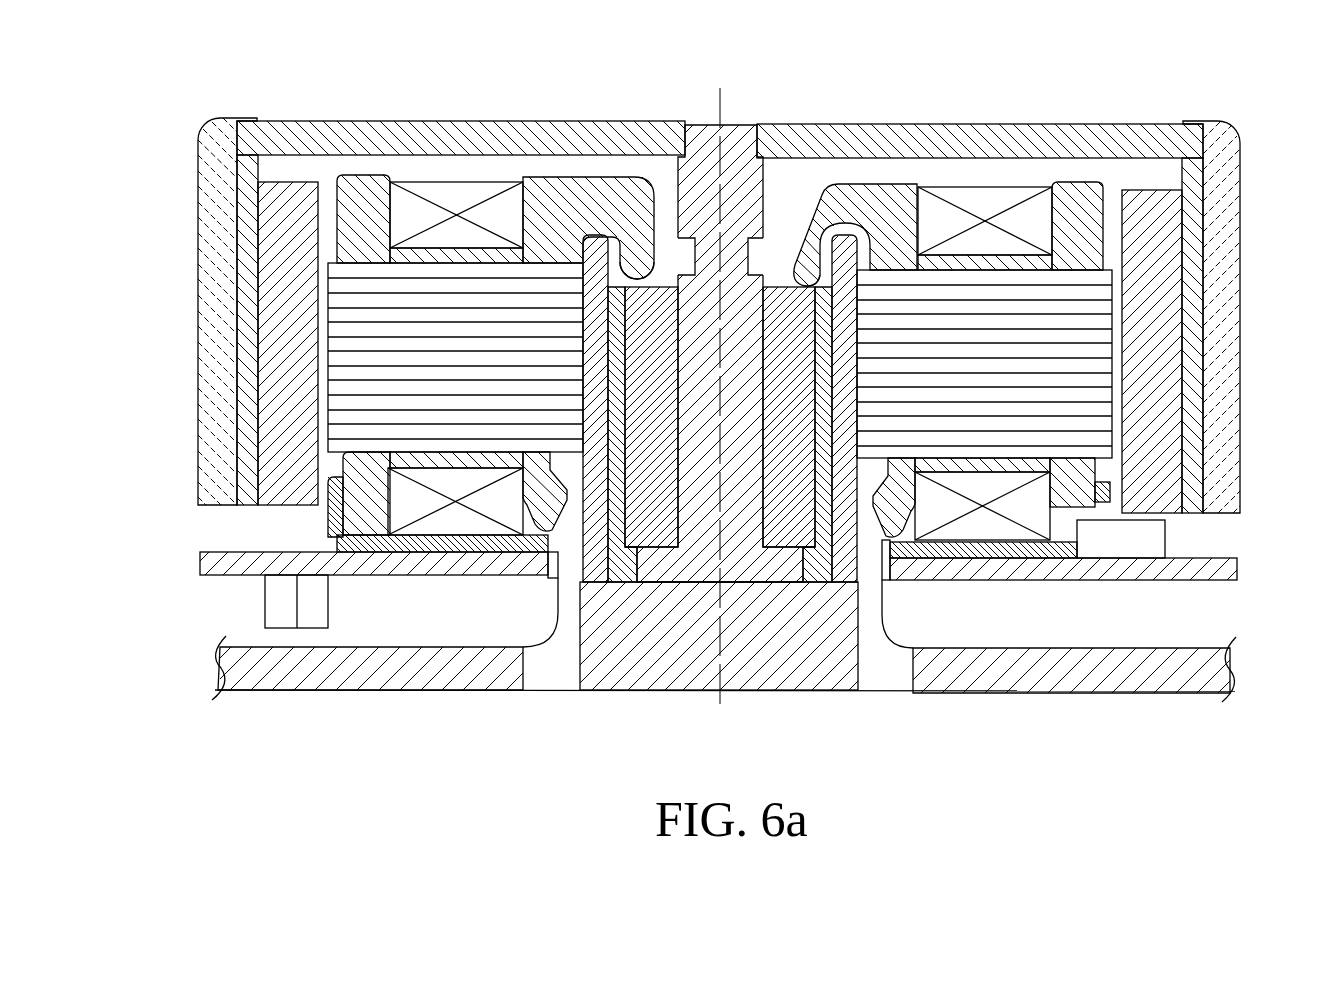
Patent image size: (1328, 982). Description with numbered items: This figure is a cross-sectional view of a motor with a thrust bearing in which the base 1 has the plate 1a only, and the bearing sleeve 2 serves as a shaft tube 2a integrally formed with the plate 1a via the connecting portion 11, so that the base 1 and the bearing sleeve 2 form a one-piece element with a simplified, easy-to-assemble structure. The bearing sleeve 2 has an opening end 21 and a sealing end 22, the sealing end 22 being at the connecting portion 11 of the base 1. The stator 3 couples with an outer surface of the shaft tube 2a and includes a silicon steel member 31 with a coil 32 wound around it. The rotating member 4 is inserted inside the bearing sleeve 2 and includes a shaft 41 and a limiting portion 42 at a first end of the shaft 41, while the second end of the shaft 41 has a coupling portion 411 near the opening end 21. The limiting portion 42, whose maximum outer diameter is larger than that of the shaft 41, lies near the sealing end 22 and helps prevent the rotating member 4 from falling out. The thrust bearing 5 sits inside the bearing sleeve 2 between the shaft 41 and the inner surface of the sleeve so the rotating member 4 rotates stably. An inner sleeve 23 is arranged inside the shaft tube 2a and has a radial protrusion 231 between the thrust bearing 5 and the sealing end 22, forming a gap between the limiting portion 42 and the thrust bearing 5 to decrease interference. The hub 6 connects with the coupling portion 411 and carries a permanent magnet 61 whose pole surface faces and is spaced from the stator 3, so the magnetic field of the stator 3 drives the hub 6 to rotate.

The base 1 is at (275, 716).
The plate 1a is at (375, 670).
The connecting portion 11 is at (547, 700).
The bearing sleeve 2 is at (590, 237).
The shaft tube 2a is at (844, 408).
The opening end 21 is at (671, 236).
The sealing end 22 is at (768, 724).
The inner sleeve 23 is at (606, 520).
The radial protrusion 231 is at (638, 549).
The stator 3 is at (322, 168).
The silicon steel member 31 is at (337, 315).
The coil 32 is at (455, 195).
The rotating member 4 is at (790, 150).
The shaft 41 is at (678, 157).
The coupling portion 411 is at (763, 157).
The limiting portion 42 is at (780, 570).
The thrust bearing 5 is at (795, 462).
The hub 6 is at (915, 135).
The permanent magnet 61 is at (1157, 239).